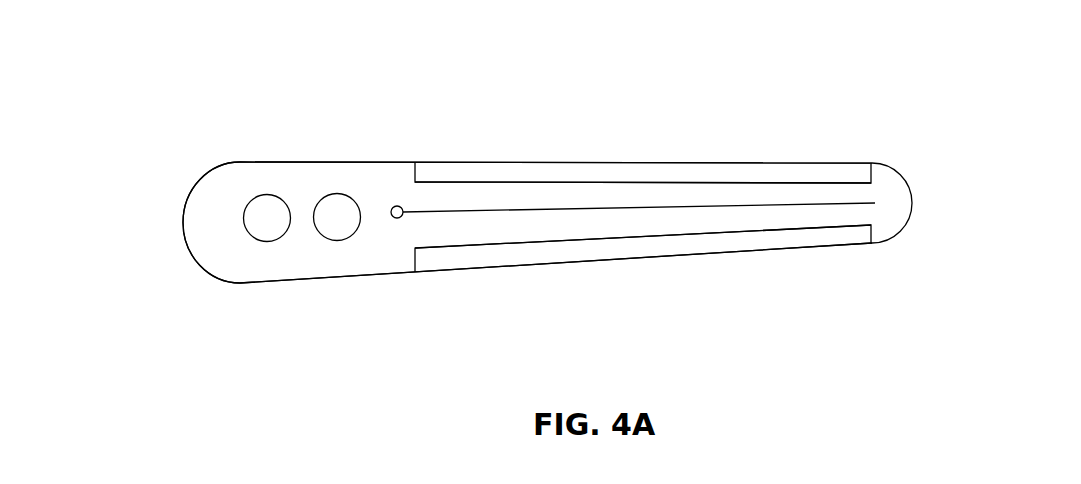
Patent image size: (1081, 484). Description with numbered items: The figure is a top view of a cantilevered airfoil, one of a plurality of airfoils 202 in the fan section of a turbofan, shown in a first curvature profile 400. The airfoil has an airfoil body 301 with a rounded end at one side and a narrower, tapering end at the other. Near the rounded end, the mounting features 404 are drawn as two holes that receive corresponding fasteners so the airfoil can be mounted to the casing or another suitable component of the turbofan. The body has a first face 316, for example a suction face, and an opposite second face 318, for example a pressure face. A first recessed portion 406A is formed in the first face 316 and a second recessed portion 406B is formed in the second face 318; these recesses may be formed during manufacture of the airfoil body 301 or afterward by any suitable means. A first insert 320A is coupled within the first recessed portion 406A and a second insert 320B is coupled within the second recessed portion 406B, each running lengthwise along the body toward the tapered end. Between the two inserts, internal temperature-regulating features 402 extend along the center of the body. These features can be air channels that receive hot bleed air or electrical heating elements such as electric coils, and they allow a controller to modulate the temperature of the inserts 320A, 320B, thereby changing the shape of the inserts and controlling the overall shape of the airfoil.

The plurality of airfoils 202 is at (960, 85).
The first curvature profile 400 is at (928, 140).
The airfoil body 301 is at (182, 220).
The mounting features 404 is at (279, 176).
The first face 316 is at (340, 161).
The second face 318 is at (302, 281).
The first recessed portion 406A is at (424, 137).
The second recessed portion 406B is at (433, 291).
The first insert 320A is at (578, 162).
The second insert 320B is at (627, 260).
The internal temperature-regulating features 402 is at (870, 198).